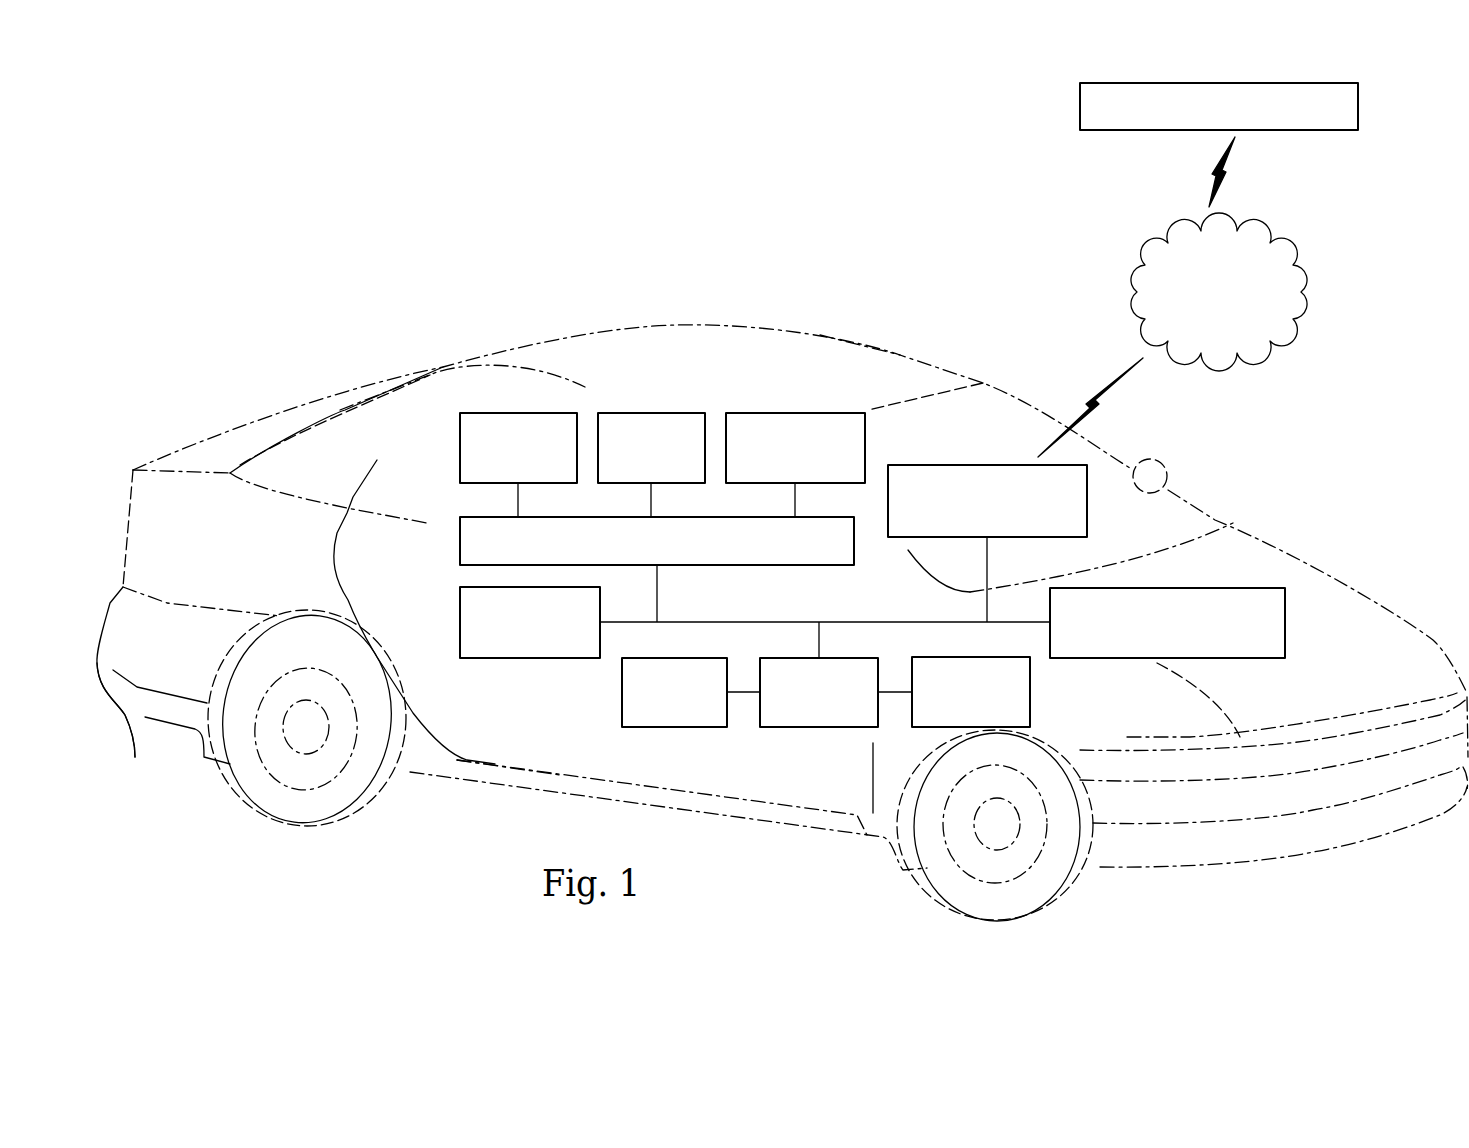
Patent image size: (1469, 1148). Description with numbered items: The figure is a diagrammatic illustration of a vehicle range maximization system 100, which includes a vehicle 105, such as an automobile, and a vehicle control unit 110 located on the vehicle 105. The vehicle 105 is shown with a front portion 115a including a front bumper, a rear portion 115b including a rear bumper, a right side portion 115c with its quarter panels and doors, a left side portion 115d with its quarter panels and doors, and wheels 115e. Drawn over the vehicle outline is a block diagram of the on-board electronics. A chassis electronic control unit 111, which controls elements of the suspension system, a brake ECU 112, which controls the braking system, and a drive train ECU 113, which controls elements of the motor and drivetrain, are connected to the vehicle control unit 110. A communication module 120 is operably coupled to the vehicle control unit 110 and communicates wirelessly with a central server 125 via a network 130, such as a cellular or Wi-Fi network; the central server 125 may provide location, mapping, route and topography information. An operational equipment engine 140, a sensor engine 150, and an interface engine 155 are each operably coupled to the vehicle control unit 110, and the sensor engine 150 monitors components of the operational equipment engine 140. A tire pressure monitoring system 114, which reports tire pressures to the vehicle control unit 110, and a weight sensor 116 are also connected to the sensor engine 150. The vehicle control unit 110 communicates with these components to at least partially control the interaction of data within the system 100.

The vehicle range maximization system 100 is at (440, 183).
The vehicle 105 is at (600, 324).
The vehicle control unit 110 is at (460, 542).
The chassis electronic control unit (ECU) 111 is at (460, 447).
The brake ECU 112 is at (642, 413).
The drive train ECU 113 is at (788, 413).
The tire pressure monitoring system (TPMS) 114 is at (622, 704).
The front portion 115a is at (1343, 840).
The rear portion 115b is at (137, 757).
The right side portion 115c is at (500, 776).
The left side portion 115d is at (872, 347).
The wheels 115e is at (290, 812).
The weight sensor 116 is at (1030, 703).
The communication module 120 is at (965, 465).
The central server 125 is at (1358, 105).
The network 130 is at (1312, 270).
The operational equipment engine 140 is at (1285, 635).
The sensor engine 150 is at (808, 728).
The interface engine 155 is at (460, 632).